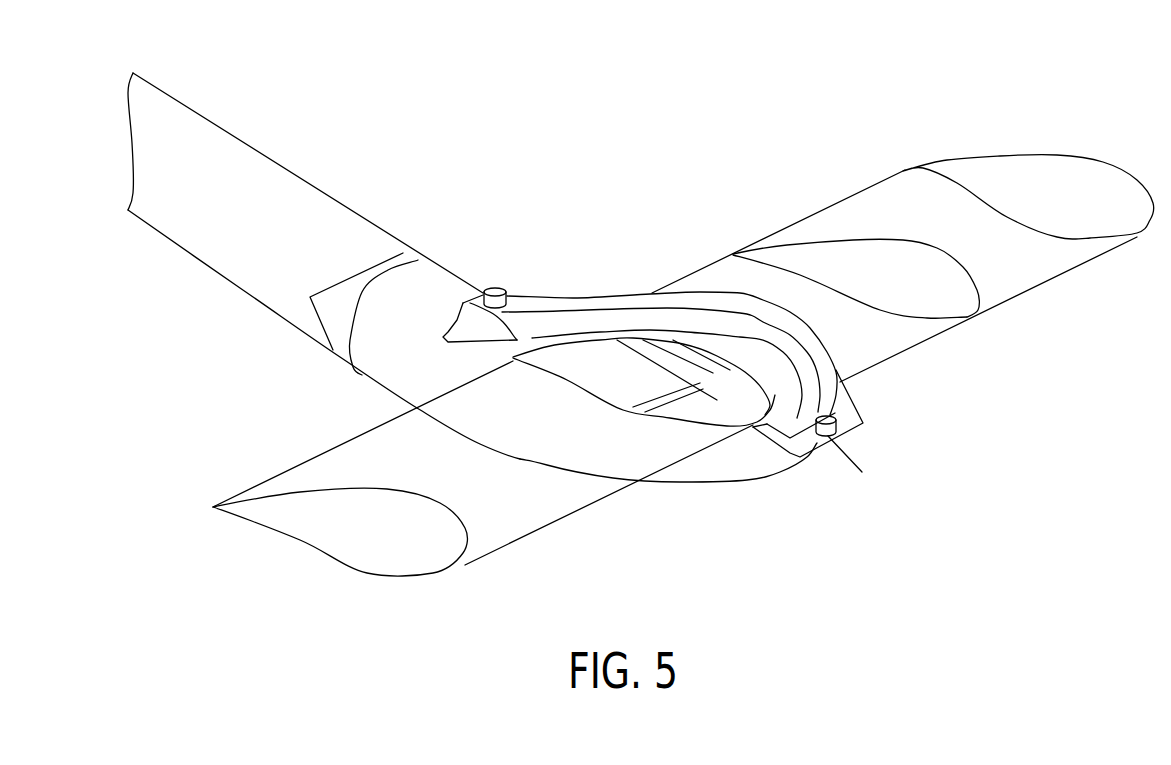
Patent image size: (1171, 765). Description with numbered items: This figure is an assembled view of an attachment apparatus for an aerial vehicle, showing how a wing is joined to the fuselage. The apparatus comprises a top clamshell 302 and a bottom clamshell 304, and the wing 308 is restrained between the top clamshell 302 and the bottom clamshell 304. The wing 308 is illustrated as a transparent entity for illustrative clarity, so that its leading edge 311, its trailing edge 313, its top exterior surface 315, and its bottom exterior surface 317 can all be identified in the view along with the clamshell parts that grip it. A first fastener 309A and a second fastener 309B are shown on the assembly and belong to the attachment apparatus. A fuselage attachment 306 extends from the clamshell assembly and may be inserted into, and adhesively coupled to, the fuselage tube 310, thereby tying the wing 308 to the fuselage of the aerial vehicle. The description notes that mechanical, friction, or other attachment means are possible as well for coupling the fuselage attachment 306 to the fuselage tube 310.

The top clamshell 302 is at (587, 307).
The bottom clamshell 304 is at (733, 387).
The fuselage attachment 306 is at (757, 462).
The wing 308 is at (978, 230).
The first fastener 309A is at (838, 434).
The second fastener 309B is at (492, 290).
The fuselage tube 310 is at (318, 232).
The leading edge 311 is at (537, 530).
The trailing edge 313 is at (270, 477).
The top exterior surface 315 is at (820, 204).
The bottom exterior surface 317 is at (1013, 306).